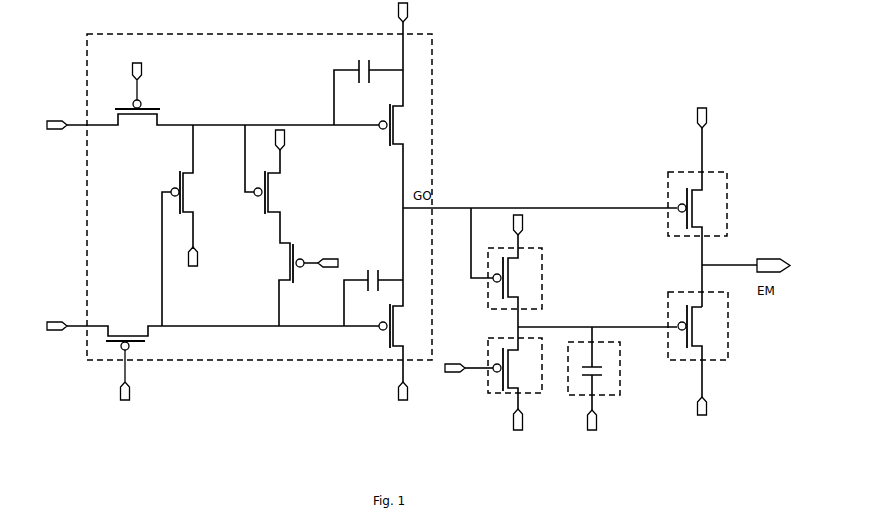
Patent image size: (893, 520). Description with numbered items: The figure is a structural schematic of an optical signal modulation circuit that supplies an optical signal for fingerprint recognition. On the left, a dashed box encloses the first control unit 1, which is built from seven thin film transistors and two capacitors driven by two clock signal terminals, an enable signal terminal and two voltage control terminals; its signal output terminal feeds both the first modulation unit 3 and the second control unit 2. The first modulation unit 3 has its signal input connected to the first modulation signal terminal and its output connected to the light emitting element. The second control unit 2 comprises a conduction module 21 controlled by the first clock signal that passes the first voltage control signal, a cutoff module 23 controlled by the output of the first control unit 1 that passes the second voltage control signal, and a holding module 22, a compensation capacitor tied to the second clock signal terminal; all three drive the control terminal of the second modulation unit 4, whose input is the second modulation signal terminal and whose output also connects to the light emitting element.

The first control unit 1 is at (432, 128).
The second control unit 2 is at (555, 271).
The conduction module 21 is at (542, 352).
The holding module 22 is at (604, 342).
The cutoff module 23 is at (542, 248).
The first modulation unit 3 is at (727, 172).
The second modulation unit 4 is at (728, 360).